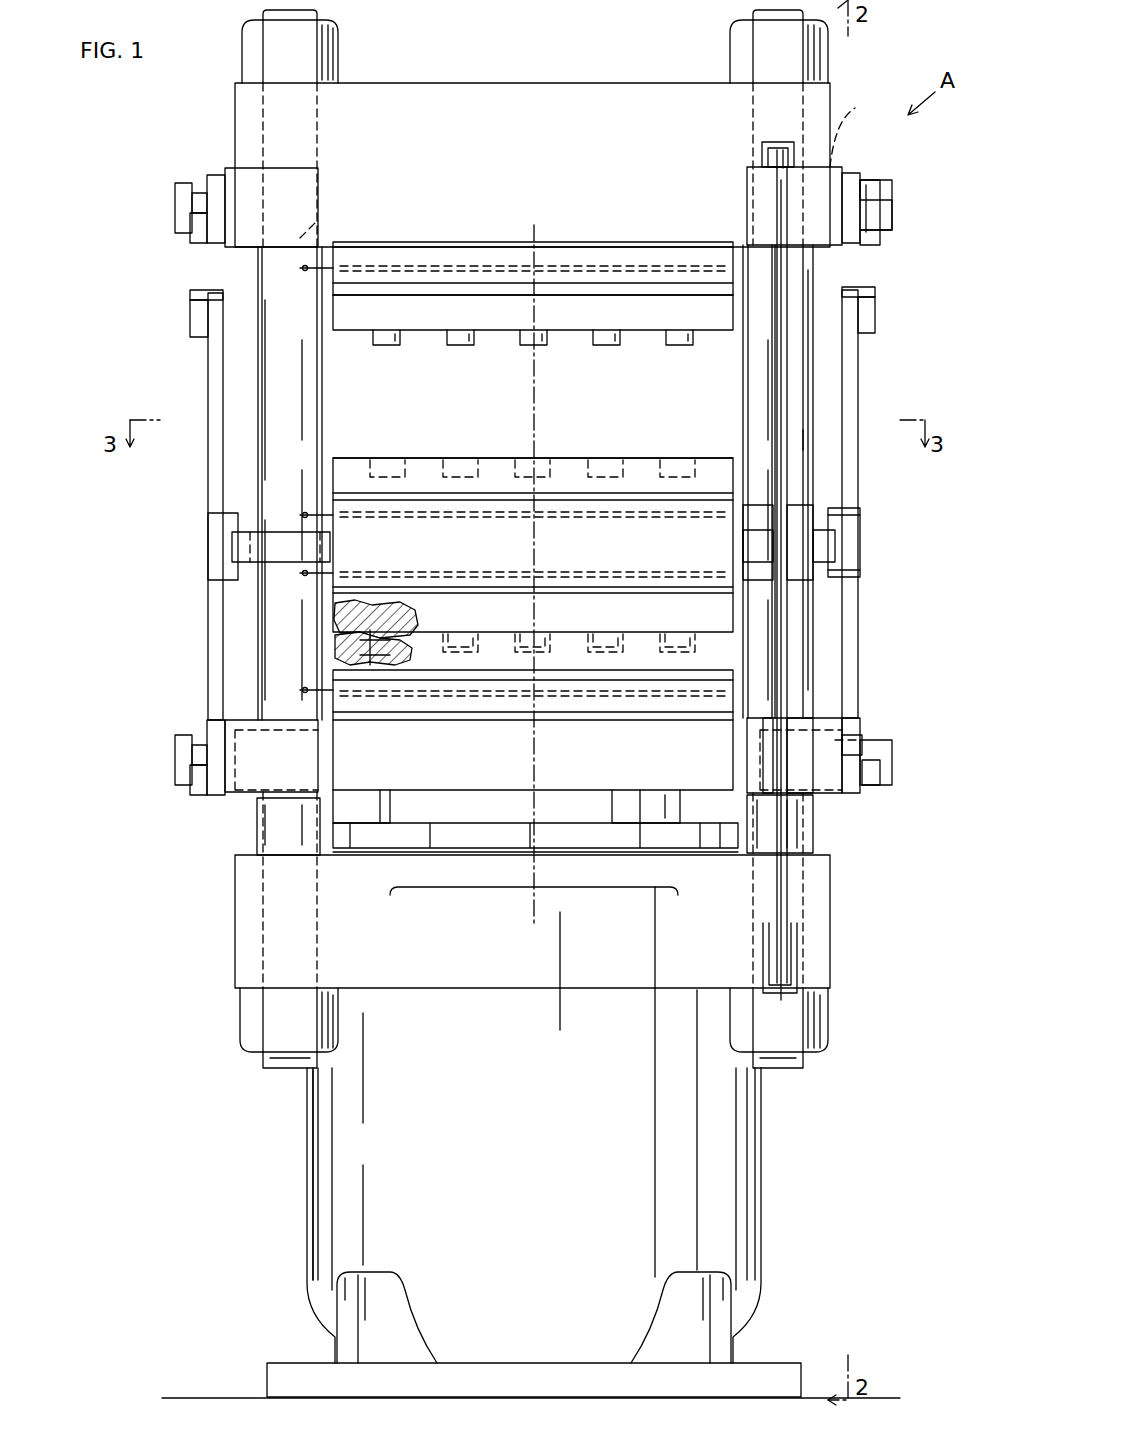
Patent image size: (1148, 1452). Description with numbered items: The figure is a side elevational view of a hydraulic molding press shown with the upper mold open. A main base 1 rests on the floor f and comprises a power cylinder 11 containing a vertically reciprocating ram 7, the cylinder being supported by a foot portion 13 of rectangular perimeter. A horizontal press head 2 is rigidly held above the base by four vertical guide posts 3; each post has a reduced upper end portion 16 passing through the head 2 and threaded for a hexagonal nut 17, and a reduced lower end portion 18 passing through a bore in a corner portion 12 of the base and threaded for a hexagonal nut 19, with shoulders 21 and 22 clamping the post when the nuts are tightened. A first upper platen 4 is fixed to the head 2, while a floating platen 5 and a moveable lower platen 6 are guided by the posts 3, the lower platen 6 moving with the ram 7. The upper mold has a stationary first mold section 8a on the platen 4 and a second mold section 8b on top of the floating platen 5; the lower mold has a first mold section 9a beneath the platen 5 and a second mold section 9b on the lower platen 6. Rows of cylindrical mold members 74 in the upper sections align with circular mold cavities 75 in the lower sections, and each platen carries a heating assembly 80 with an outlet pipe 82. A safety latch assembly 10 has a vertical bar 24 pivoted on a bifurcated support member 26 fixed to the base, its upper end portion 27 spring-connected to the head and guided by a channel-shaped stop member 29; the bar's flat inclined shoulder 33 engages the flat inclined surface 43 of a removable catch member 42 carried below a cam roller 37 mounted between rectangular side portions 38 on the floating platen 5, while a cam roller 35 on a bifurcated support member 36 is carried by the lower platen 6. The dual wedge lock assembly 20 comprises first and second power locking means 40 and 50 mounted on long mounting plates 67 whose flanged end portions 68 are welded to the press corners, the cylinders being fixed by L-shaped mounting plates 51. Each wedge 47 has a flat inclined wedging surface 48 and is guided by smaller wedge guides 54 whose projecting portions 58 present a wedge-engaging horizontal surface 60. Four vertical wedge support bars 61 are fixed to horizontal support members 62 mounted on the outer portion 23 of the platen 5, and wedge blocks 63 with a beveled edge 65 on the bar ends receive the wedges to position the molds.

The main base 1 is at (771, 1154).
The press head 2 is at (542, 98).
The guide posts 3 is at (318, 408).
The first upper platen 4 is at (598, 255).
The floating platen 5 is at (578, 557).
The moveable lower platen 6 is at (458, 710).
The ram 7 is at (625, 800).
The first mold section 8a is at (575, 332).
The second mold section 8b is at (565, 467).
The first mold section 9a is at (352, 614).
The second mold section 9b is at (355, 645).
The safety latch assembly 10 is at (809, 465).
The power cylinder 11 is at (325, 1163).
The corner portions 12 is at (237, 945).
The foot portion 13 is at (318, 1370).
The upper end portion 16 is at (320, 140).
The hexagonal nut 17 is at (338, 46).
The lower end portion 18 is at (320, 940).
The hexagonal nut 19 is at (245, 1035).
The dual wedge lock assembly 20 is at (176, 682).
The shoulder 21 is at (300, 238).
The shoulder 22 is at (298, 857).
The outer portion 23 is at (245, 530).
The vertical bar 24 is at (782, 350).
The bifurcated support member 26 is at (765, 965).
The upper end portion 27 is at (778, 172).
The channel-shaped stop member 29 is at (765, 153).
The flat inclined shoulder 33 is at (775, 433).
The cam roller 35 is at (808, 755).
The bifurcated support member 36 is at (765, 732).
The cam roller 37 is at (855, 521).
The rectangular side portions 38 is at (790, 503).
The first power locking means 40 is at (538, 185).
The removable catch member 42 is at (818, 546).
The flat inclined surface 43 is at (838, 571).
The wedge 47 is at (183, 208).
The flat inclined wedging surface 48 is at (868, 190).
The second power locking means 50 is at (534, 763).
The L-shaped mounting plates 51 is at (192, 200).
The wedge guides 54 is at (218, 183).
The projecting portion 58 is at (200, 240).
The wedge-engaging horizontal surface 60 is at (880, 205).
The wedge support bars 61 is at (213, 372).
The support members 62 is at (213, 527).
The wedge blocks 63 is at (195, 312).
The beveled edge 65 is at (203, 292).
The mounting plates 67 is at (858, 126).
The flanged end portions 68 is at (318, 188).
The mold members 74 is at (390, 345).
The mold cavities 75 is at (382, 463).
The heating assembly 80 is at (437, 266).
The outlet pipe 82 is at (310, 272).
The floor f is at (210, 1398).